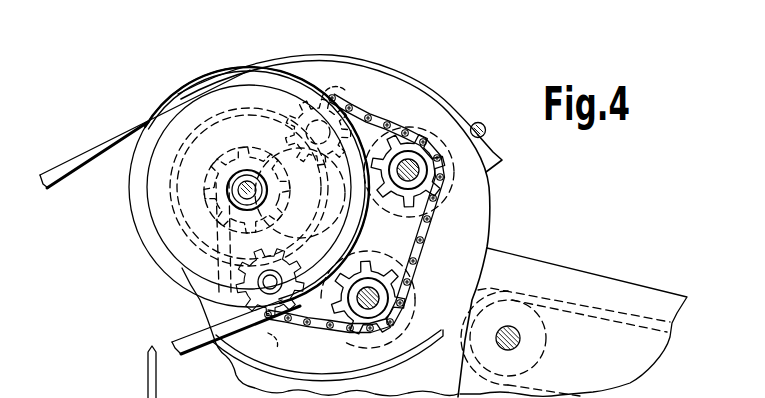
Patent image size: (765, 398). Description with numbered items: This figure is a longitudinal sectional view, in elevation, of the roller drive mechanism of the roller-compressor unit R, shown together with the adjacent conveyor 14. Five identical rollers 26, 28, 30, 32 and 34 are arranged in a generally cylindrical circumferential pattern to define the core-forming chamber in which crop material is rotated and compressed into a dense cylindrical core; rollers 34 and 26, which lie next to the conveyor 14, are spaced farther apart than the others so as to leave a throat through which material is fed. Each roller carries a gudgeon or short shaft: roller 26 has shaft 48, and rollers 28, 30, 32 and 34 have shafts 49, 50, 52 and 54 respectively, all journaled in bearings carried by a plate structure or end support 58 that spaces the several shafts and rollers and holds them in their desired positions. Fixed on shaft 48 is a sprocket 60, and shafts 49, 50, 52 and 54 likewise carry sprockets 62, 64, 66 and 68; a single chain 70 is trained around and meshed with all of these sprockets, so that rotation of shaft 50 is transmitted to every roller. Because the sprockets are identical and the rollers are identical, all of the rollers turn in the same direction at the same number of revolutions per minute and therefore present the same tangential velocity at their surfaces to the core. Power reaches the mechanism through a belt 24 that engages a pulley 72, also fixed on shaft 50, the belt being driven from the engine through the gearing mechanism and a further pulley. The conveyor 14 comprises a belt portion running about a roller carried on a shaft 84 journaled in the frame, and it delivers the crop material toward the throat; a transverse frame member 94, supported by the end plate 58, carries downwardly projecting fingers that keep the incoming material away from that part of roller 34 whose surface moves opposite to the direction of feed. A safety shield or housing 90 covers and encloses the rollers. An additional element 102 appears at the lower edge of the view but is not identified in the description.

The conveyor 14 is at (664, 246).
The belt 24 is at (134, 120).
The roller 26 is at (417, 290).
The roller 28 is at (268, 344).
The roller 30 is at (212, 228).
The roller 32 is at (350, 92).
The roller 34 is at (419, 126).
The shaft 48 is at (366, 300).
The shaft 49 is at (238, 279).
The shaft 50 is at (244, 184).
The shaft 52 is at (344, 94).
The shaft 54 is at (432, 184).
The end support 58 is at (489, 222).
The sprocket 60 is at (386, 272).
The sprocket 62 is at (296, 243).
The sprocket 64 is at (268, 190).
The sprocket 66 is at (282, 126).
The sprocket 68 is at (354, 213).
The chain 70 is at (430, 237).
The pulley 72 is at (178, 100).
The shaft 84 is at (517, 345).
The safety shield 90 is at (287, 68).
The transverse frame member 94 is at (498, 161).
The rod 102 is at (187, 372).
The roller-compressor unit R is at (400, 59).